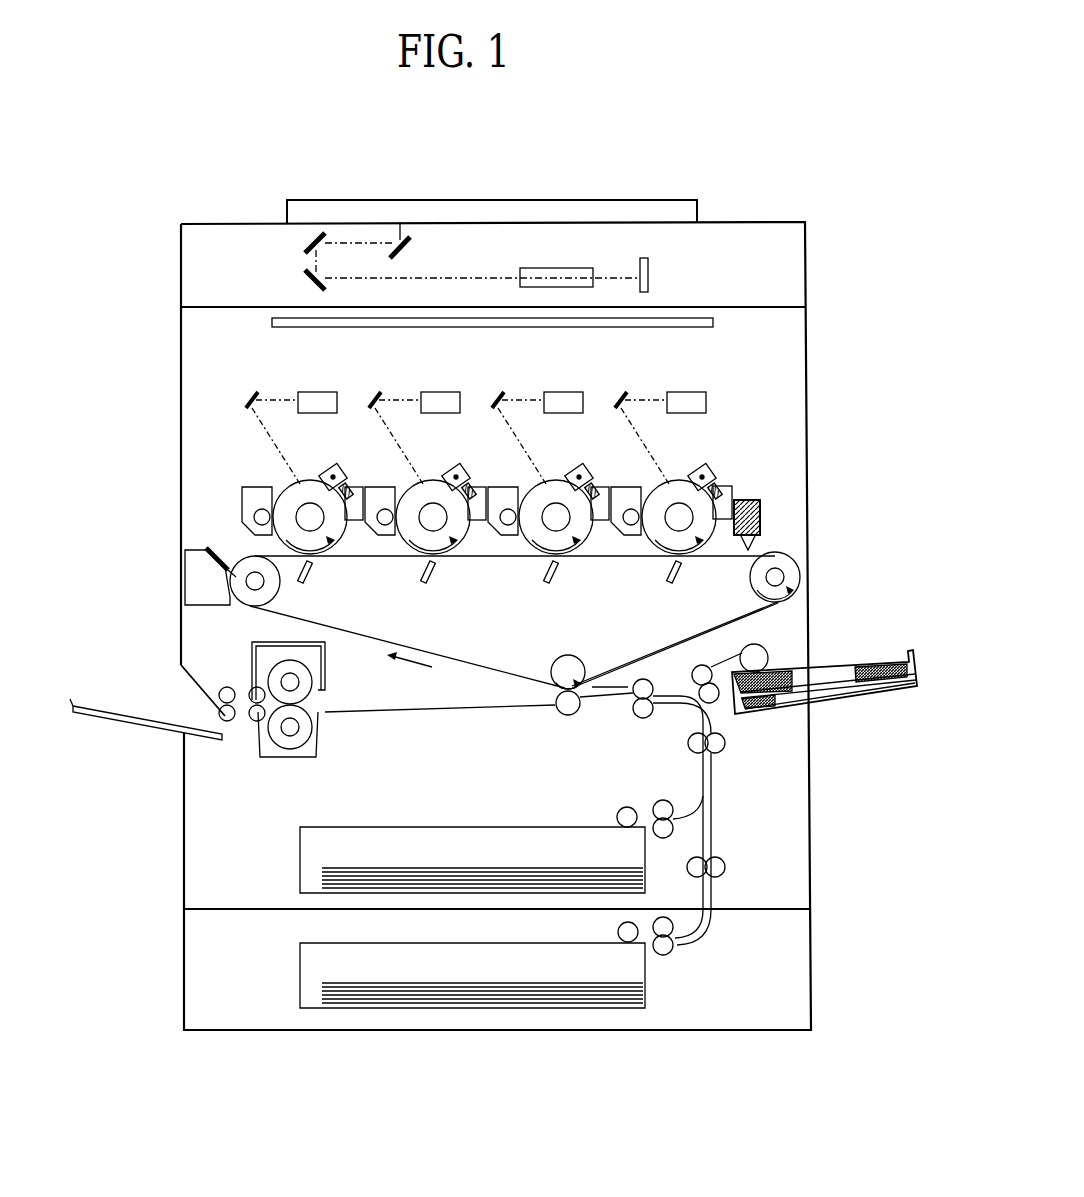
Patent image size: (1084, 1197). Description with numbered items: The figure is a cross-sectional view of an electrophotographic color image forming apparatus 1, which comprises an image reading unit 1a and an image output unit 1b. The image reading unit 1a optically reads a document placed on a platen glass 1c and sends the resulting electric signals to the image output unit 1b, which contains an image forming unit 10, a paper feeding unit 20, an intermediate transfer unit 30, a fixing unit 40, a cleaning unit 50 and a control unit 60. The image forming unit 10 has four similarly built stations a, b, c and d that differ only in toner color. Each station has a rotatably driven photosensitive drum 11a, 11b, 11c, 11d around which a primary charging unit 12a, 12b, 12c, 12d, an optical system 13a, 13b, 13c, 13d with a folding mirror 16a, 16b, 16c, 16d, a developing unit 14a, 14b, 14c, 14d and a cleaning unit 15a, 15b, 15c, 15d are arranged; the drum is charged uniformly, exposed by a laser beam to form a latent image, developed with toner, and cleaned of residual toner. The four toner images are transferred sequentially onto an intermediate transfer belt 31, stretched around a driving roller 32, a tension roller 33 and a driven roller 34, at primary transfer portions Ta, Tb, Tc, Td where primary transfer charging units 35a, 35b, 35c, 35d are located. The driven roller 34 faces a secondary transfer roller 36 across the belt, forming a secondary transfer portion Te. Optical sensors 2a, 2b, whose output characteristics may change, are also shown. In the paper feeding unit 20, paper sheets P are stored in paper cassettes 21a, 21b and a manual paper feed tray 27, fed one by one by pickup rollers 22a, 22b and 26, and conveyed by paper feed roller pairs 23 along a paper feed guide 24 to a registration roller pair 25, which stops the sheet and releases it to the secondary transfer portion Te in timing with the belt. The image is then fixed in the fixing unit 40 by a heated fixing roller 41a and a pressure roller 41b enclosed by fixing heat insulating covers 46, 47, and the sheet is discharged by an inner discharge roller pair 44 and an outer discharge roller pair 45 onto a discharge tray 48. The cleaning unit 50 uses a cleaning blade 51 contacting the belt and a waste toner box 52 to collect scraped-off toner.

The image forming apparatus 1 is at (793, 203).
The image reading unit 1a is at (800, 264).
The image output unit 1b is at (800, 330).
The platen glass 1c is at (756, 220).
The optical sensor 2a is at (762, 517).
The optical sensor 2b is at (747, 517).
The image forming unit 10 is at (747, 412).
The photosensitive drum 11a is at (680, 482).
The photosensitive drum 11b is at (557, 482).
The photosensitive drum 11c is at (434, 482).
The photosensitive drum 11d is at (311, 482).
The primary charging unit 12a is at (708, 465).
The primary charging unit 12b is at (585, 465).
The primary charging unit 12c is at (462, 465).
The primary charging unit 12d is at (339, 465).
The optical system 13a is at (699, 392).
The optical system 13b is at (576, 392).
The optical system 13c is at (453, 392).
The optical system 13d is at (330, 392).
The developing unit 14a is at (630, 490).
The developing unit 14b is at (505, 490).
The developing unit 14c is at (382, 490).
The developing unit 14d is at (252, 492).
The cleaning unit 15a is at (733, 487).
The cleaning unit 15b is at (601, 522).
The cleaning unit 15c is at (478, 522).
The cleaning unit 15d is at (355, 523).
The folding mirror 16a is at (621, 393).
The folding mirror 16b is at (498, 393).
The folding mirror 16c is at (375, 393).
The folding mirror 16d is at (252, 393).
The station a is at (653, 403).
The station b is at (530, 403).
The station c is at (407, 403).
The station d is at (284, 403).
The paper feeding unit 20 is at (715, 809).
The paper cassette 21a is at (420, 826).
The paper cassette 21b is at (422, 942).
The pickup roller 22a is at (622, 808).
The pickup roller 22b is at (618, 931).
The paper feed roller pair 23 is at (702, 667).
The paper feed guide 24 is at (716, 728).
The registration roller pair 25 is at (636, 712).
The pickup roller 26 is at (769, 653).
The manual paper feed tray 27 is at (862, 706).
The intermediate transfer unit 30 is at (483, 662).
The intermediate transfer belt 31 is at (615, 672).
The driving roller 32 is at (760, 595).
The tension roller 33 is at (246, 603).
The driven roller 34 is at (566, 658).
The primary transfer charging unit 35a is at (672, 583).
The primary transfer charging unit 35b is at (548, 573).
The primary transfer charging unit 35c is at (431, 584).
The primary transfer charging unit 35d is at (308, 584).
The secondary transfer roller 36 is at (570, 716).
The primary transfer portion Ta is at (685, 557).
The primary transfer portion Tb is at (562, 557).
The primary transfer portion Tc is at (439, 557).
The primary transfer portion Td is at (316, 557).
The secondary transfer portion Te is at (556, 700).
The fixing unit 40 is at (262, 768).
The fixing roller 41a is at (313, 680).
The pressure roller 41b is at (311, 742).
The inner discharge roller pair 44 is at (250, 721).
The outer discharge roller pair 45 is at (228, 687).
The fixing heat insulating cover 46 is at (310, 642).
The fixing heat insulating cover 47 is at (293, 759).
The discharge tray 48 is at (98, 713).
The cleaning unit 50 is at (182, 582).
The cleaning blade 51 is at (205, 546).
The waste toner box 52 is at (196, 605).
The control unit 60 is at (272, 323).
The transfer material (paper sheet) P is at (856, 668).